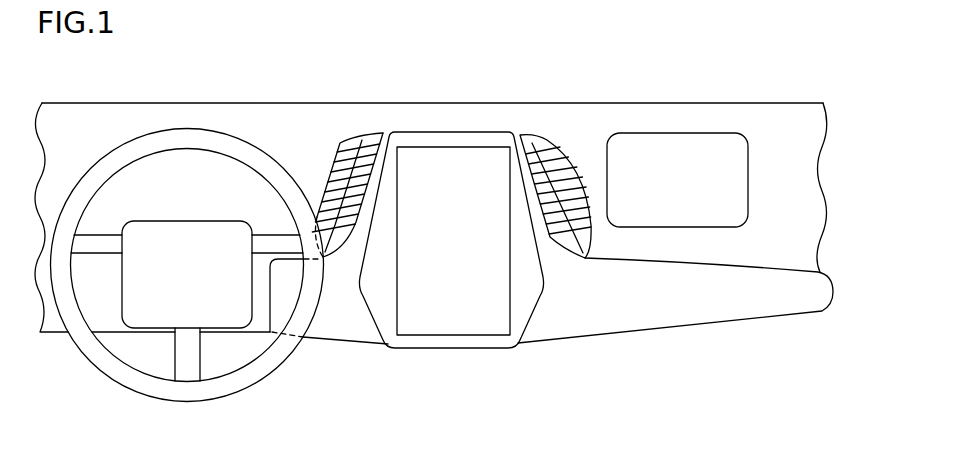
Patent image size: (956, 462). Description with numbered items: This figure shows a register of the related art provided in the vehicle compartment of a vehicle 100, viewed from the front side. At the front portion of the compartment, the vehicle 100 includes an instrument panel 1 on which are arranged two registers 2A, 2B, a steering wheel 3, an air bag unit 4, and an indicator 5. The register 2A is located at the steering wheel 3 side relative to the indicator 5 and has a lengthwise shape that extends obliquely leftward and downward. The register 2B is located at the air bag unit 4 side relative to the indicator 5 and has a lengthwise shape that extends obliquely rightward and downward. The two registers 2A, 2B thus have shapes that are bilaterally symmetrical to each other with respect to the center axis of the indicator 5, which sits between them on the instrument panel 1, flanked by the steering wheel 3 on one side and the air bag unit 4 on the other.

The vehicle 100 is at (281, 81).
The instrument panel 1 is at (607, 120).
The register 2A is at (351, 130).
The register 2B is at (548, 136).
The steering wheel 3 is at (187, 140).
The air bag unit 4 is at (678, 183).
The indicator 5 is at (453, 197).